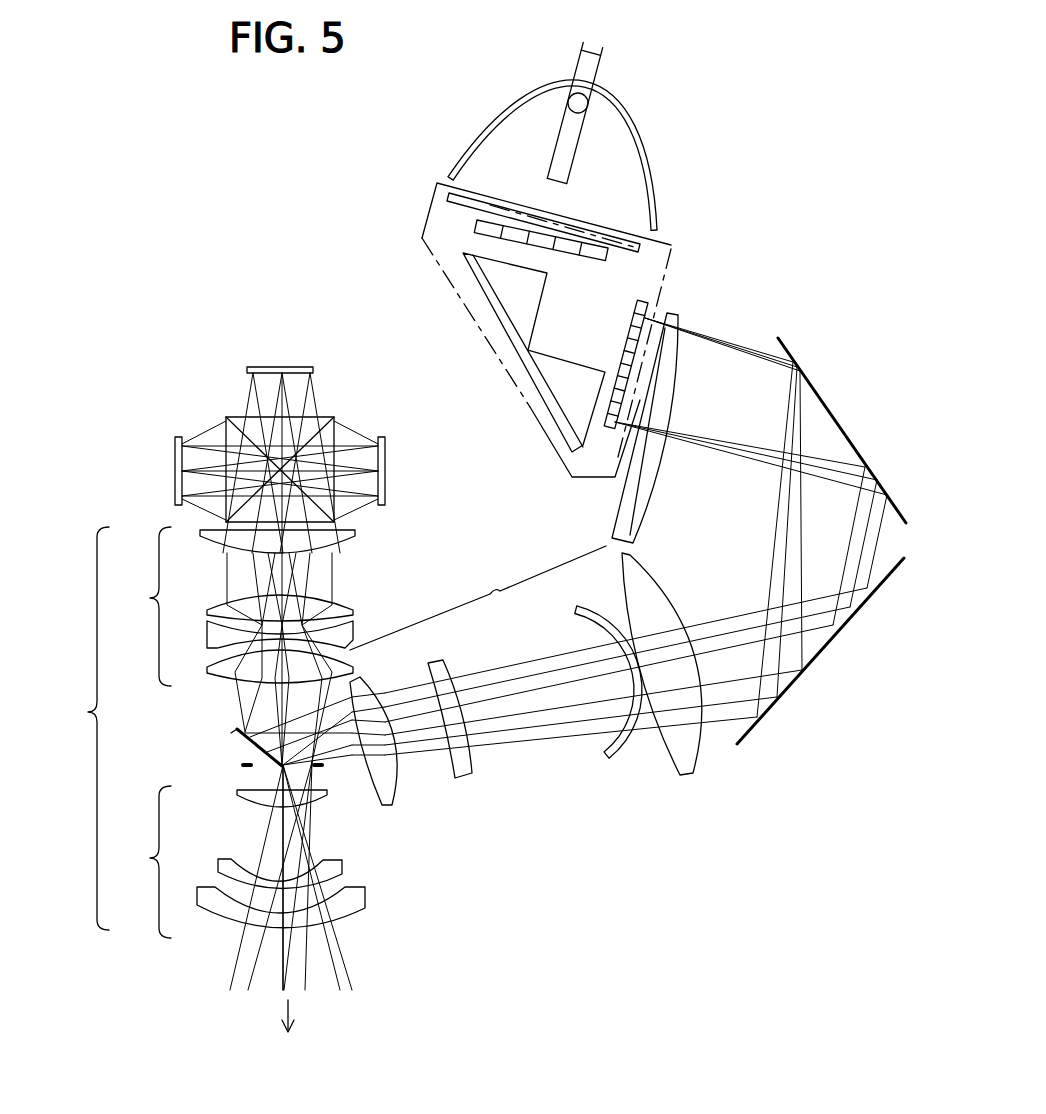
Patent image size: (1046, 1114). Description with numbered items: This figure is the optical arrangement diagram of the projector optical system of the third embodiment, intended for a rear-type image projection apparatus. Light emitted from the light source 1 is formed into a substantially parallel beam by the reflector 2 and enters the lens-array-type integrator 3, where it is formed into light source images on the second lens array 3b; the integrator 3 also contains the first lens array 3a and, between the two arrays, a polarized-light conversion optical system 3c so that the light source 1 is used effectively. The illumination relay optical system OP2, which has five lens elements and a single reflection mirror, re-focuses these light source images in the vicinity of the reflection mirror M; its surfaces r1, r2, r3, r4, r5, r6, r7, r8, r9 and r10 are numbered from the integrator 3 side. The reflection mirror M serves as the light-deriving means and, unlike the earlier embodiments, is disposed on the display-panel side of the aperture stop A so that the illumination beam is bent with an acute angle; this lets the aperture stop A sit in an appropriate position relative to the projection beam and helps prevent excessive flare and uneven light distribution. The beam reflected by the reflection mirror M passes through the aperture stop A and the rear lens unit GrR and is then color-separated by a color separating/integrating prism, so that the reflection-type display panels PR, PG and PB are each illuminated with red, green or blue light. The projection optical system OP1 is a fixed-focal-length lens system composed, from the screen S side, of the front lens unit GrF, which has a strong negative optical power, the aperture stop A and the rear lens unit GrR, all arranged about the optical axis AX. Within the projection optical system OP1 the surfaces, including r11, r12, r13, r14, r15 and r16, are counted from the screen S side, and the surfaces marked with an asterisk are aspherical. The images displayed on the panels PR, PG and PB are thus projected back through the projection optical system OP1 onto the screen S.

The light source 1 is at (590, 102).
The reflector 2 is at (657, 142).
The integrator 3 is at (669, 262).
The first lens array 3a is at (607, 257).
The second lens array 3b is at (638, 302).
The polarized-light conversion optical system 3c is at (518, 303).
The reflection-type display panel PG is at (290, 366).
The reflection-type display panel PR is at (175, 436).
The reflection-type display panel PB is at (386, 448).
The first surface r1 is at (612, 527).
The second surface r2 is at (648, 498).
The third surface r3 is at (652, 560).
The fourth surface r4 is at (622, 556).
The fifth surface r5 is at (570, 602).
The sixth surface r6 is at (580, 618).
The seventh surface r7 is at (220, 682).
The eighth surface r8 is at (213, 659).
The ninth surface r9 is at (353, 640).
The tenth surface r10 is at (356, 621).
The eleventh surface r11 is at (350, 612).
The twelfth surface r12 is at (350, 598).
The thirteenth surface r13 is at (342, 552).
The fourteenth surface r14 is at (357, 538).
The fifteenth surface r15 is at (350, 524).
The sixteenth surface r16 is at (323, 417).
The reflection mirror M is at (236, 730).
The aperture stop A is at (246, 767).
The optical axis AX is at (283, 972).
The screen S is at (298, 1061).
The projection optical system OP1 is at (76, 728).
The illumination relay optical system OP2 is at (478, 598).
The rear lens unit GrR is at (136, 606).
The front lens unit GrF is at (136, 862).